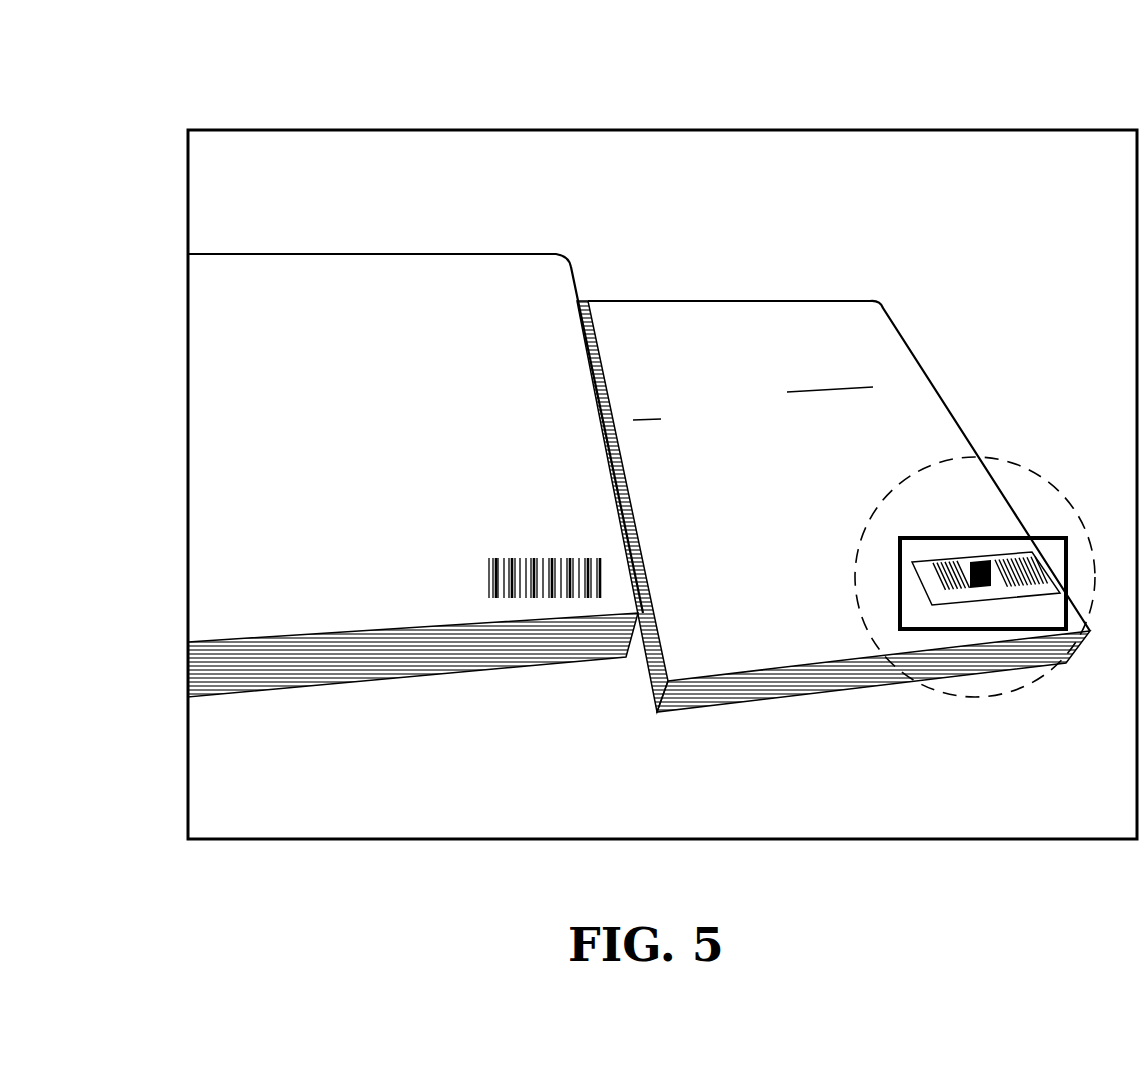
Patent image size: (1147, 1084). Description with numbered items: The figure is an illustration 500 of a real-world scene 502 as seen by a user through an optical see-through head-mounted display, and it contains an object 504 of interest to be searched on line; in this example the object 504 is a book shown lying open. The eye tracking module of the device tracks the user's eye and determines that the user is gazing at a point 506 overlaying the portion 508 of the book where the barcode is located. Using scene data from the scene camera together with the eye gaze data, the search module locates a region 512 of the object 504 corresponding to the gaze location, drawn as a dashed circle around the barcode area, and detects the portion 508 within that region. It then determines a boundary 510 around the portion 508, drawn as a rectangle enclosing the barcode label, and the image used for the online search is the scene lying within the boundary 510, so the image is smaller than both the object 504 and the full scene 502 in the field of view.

The illustration 500 is at (97, 80).
The real-world scene 502 is at (238, 129).
The object of interest 504 is at (731, 703).
The eye gaze point 506 is at (982, 557).
The portion of the object 508 is at (948, 605).
The boundary 510 is at (1053, 537).
The region of the object 512 is at (938, 691).